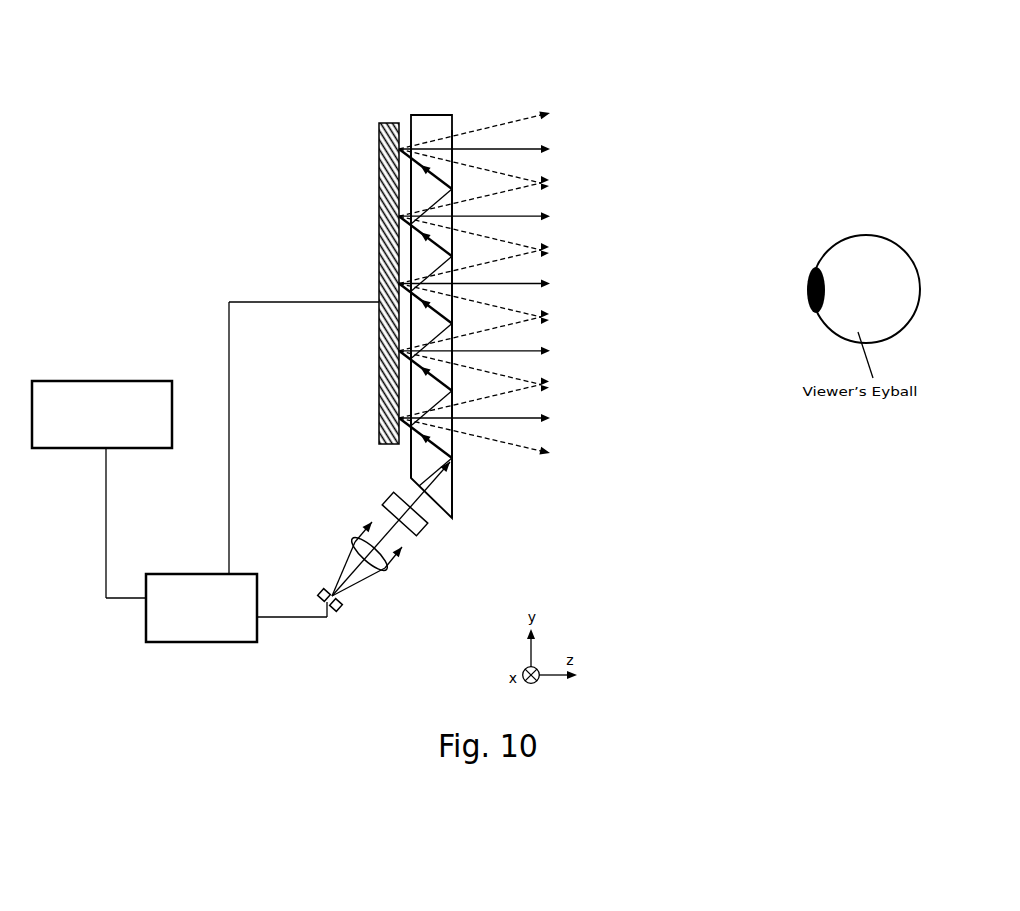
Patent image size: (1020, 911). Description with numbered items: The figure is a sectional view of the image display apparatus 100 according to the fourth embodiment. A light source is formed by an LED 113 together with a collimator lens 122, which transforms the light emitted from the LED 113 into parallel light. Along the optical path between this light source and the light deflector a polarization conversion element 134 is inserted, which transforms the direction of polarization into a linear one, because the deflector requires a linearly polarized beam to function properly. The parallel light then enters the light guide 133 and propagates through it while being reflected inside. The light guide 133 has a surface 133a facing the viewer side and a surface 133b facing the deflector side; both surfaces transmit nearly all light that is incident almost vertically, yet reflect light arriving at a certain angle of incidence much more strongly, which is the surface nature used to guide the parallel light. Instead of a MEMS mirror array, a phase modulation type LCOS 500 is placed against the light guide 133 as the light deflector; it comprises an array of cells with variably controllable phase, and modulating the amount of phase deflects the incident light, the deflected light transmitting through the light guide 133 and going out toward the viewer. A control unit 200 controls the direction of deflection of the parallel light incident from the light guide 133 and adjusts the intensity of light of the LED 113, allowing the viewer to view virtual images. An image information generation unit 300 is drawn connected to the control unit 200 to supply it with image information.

The image display apparatus 100 is at (363, 89).
The phase modulation type LCOS 500 is at (390, 123).
The light guide 133 is at (437, 122).
The surface of the light guide facing the viewer side 133a is at (452, 458).
The surface of the light guide facing the light deflector side 133b is at (410, 445).
The polarization conversion element 134 is at (418, 528).
The collimator lens 122 is at (387, 569).
The LED 113 is at (338, 608).
The image information generation unit 300 is at (102, 426).
The control unit 200 is at (204, 619).